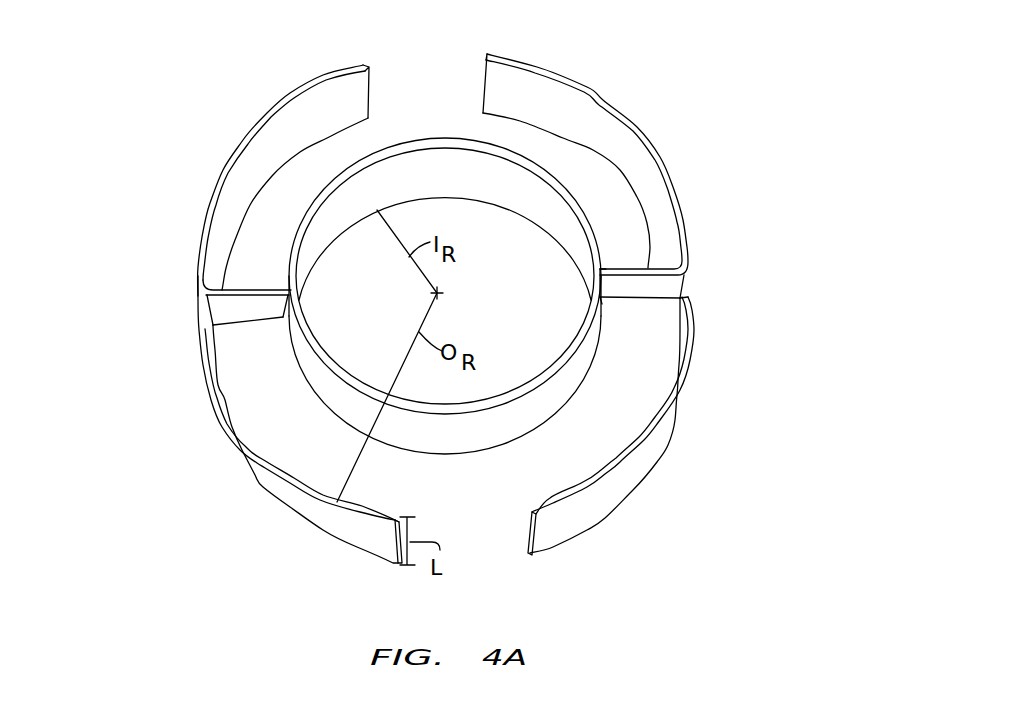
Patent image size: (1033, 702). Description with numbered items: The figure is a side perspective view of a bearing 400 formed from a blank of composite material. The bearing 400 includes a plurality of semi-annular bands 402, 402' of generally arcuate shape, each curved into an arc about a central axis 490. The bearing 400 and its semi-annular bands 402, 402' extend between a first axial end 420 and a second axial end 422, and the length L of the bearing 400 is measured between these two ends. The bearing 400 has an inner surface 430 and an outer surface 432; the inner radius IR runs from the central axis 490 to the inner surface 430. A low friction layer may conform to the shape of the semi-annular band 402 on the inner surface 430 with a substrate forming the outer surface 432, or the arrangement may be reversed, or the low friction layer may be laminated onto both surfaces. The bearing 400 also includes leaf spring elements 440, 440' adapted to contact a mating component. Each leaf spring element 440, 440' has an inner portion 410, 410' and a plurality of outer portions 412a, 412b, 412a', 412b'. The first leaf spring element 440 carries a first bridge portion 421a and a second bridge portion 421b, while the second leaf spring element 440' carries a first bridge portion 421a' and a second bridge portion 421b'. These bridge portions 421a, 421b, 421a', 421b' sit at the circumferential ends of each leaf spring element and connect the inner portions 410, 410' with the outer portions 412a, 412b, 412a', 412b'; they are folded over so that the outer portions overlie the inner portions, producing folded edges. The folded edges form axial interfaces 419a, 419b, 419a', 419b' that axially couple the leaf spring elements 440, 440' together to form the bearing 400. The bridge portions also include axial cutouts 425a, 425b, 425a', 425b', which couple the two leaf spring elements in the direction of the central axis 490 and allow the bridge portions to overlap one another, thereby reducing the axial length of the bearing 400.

The bearing 400 is at (127, 65).
The semi-annular band 402 is at (587, 164).
The semi-annular band 402' is at (616, 416).
The inner portion 410 is at (445, 249).
The inner portion 410' is at (445, 414).
The outer portion 412a is at (245, 175).
The outer portion 412a' is at (280, 444).
The outer portion 412b is at (605, 164).
The outer portion 412b' is at (605, 440).
The axial interface 419a is at (162, 307).
The axial interface 419a' is at (337, 309).
The axial interface 419b is at (722, 271).
The axial interface 419b' is at (727, 285).
The first axial end 420 is at (280, 102).
The first bridge portion 421a is at (248, 354).
The first bridge portion 421a' is at (247, 267).
The second bridge portion 421b is at (640, 329).
The second bridge portion 421b' is at (682, 258).
The second axial end 422 is at (246, 216).
The axial cutout 425a is at (259, 425).
The axial cutout 425a' is at (156, 268).
The axial cutout 425b is at (680, 223).
The axial cutout 425b' is at (685, 317).
The inner surface 430 is at (324, 252).
The outer surface 432 is at (322, 74).
The leaf spring element 440 is at (529, 73).
The leaf spring element 440' is at (634, 508).
The central axis 490 is at (443, 291).